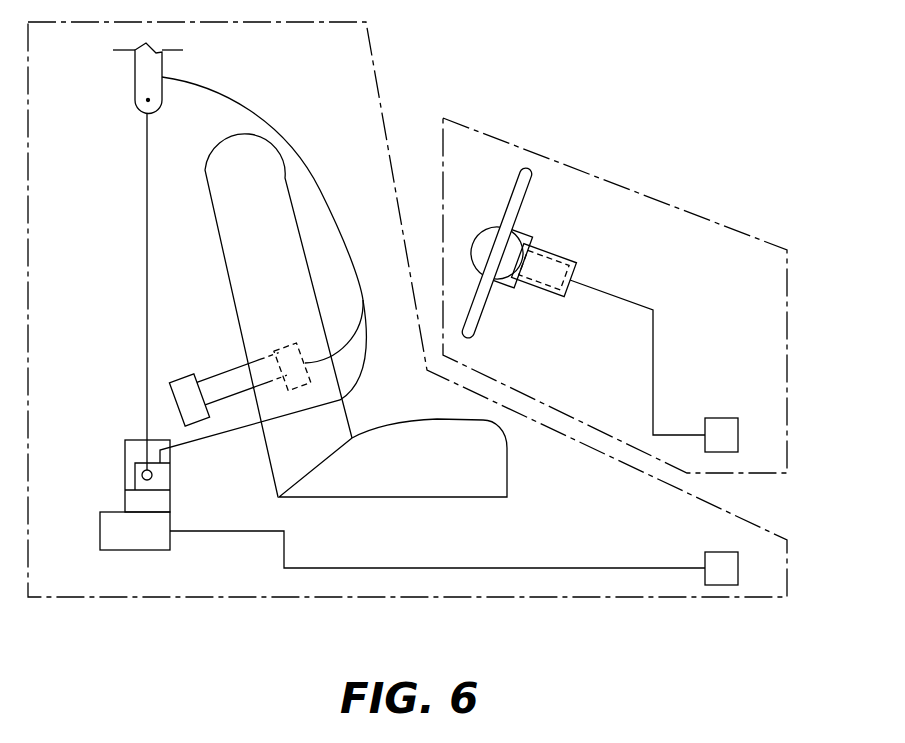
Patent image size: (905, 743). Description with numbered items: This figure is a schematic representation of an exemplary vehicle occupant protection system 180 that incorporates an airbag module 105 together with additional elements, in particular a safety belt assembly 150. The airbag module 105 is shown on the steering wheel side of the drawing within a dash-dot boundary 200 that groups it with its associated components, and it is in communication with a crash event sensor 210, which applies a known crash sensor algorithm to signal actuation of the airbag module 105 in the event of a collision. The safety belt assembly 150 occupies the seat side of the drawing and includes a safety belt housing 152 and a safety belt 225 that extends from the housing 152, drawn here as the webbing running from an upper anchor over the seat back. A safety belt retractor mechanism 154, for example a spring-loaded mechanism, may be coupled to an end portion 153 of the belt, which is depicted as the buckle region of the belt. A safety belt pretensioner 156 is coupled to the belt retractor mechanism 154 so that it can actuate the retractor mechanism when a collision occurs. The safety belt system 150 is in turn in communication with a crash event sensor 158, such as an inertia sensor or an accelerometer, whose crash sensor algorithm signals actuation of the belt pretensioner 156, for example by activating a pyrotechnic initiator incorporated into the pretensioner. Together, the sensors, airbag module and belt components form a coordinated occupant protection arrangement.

The airbag module 105 is at (493, 223).
The safety belt assembly 150 is at (253, 598).
The safety belt housing 152 is at (135, 490).
The end portion 153 is at (158, 425).
The safety belt retractor mechanism 154 is at (125, 440).
The safety belt pretensioner 156 is at (135, 528).
The crash event sensor 158 is at (725, 571).
The vehicle occupant protection system 180 is at (468, 65).
The steering system 200 is at (603, 177).
The crash event sensor 210 is at (718, 440).
The safety belt 225 is at (310, 153).